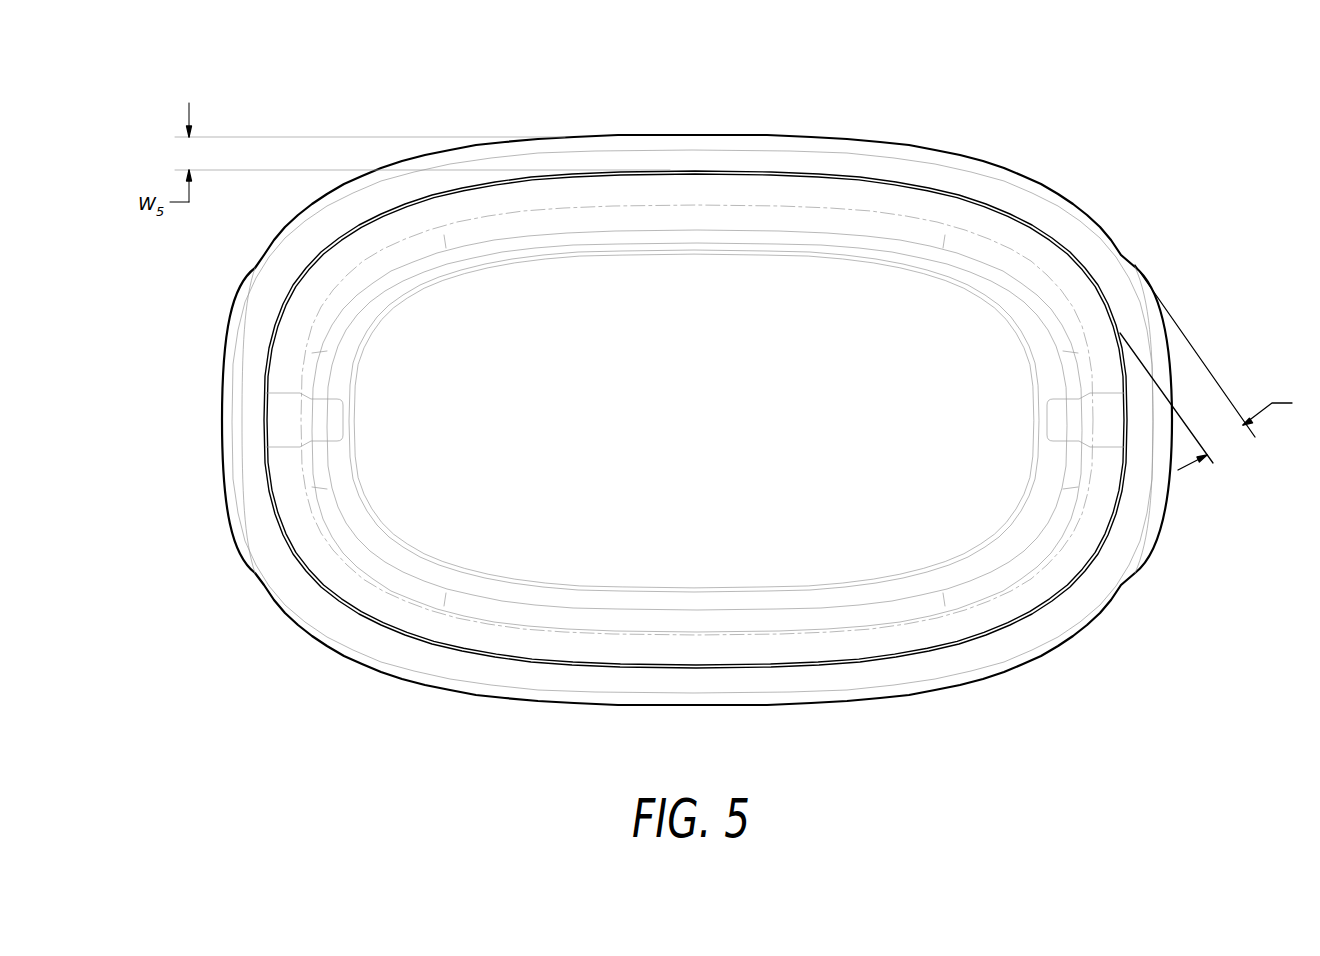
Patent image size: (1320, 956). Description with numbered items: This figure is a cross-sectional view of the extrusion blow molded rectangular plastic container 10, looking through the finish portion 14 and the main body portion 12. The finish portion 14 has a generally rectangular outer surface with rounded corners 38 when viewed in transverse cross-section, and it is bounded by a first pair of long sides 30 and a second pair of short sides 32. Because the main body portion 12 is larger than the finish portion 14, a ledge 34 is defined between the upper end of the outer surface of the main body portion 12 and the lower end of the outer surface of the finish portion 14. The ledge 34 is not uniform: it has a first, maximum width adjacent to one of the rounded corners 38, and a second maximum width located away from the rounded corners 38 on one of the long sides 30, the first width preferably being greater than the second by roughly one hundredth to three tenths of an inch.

The plastic container 10 is at (290, 645).
The main body portion 12 is at (1000, 680).
The finish portion 14 is at (1148, 163).
The long sides 30 is at (690, 128).
The short sides 32 is at (196, 462).
The ledge 34 is at (958, 177).
The rounded corners 38 is at (1133, 234).